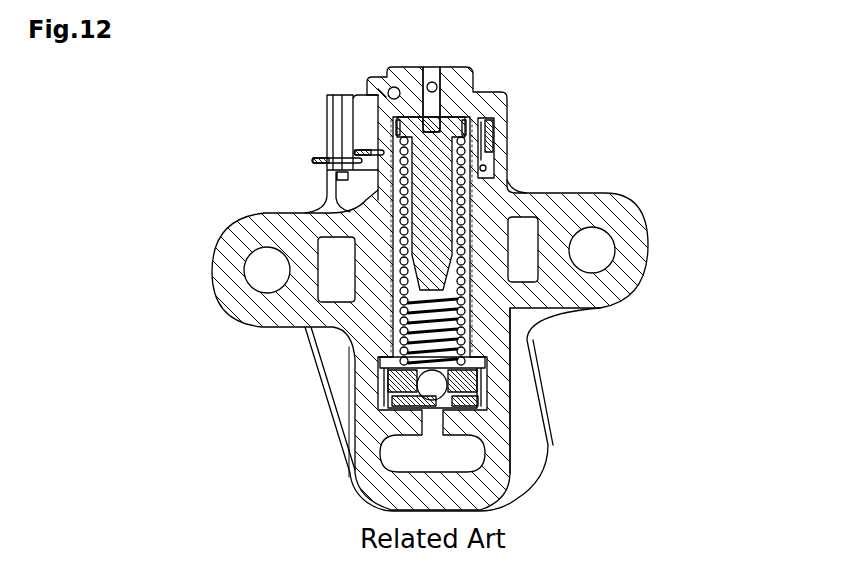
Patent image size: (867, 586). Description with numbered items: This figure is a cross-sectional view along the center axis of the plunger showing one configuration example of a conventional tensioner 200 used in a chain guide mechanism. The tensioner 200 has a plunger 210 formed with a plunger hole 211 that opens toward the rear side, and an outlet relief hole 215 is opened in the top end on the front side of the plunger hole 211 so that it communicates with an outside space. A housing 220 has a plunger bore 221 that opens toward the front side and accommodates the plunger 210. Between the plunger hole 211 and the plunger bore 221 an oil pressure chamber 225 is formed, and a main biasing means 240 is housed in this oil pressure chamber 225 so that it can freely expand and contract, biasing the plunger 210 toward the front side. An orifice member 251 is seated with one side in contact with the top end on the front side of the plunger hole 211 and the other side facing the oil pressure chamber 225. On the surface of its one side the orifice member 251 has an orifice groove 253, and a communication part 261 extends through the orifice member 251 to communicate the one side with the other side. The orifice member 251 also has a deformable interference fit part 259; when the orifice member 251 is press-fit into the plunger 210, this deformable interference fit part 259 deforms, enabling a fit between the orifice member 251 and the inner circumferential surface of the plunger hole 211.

The tensioner 200 is at (326, 410).
The plunger 210 is at (481, 82).
The plunger hole 211 is at (482, 186).
The outlet relief hole 215 is at (436, 84).
The housing 220 is at (493, 437).
The plunger bore 221 is at (441, 306).
The oil pressure chamber 225 is at (478, 312).
The main biasing means 240 is at (487, 330).
The orifice member 251 is at (428, 199).
The orifice groove 253 is at (412, 116).
The deformable interference fit part 259 is at (393, 131).
The communication part 261 is at (484, 133).